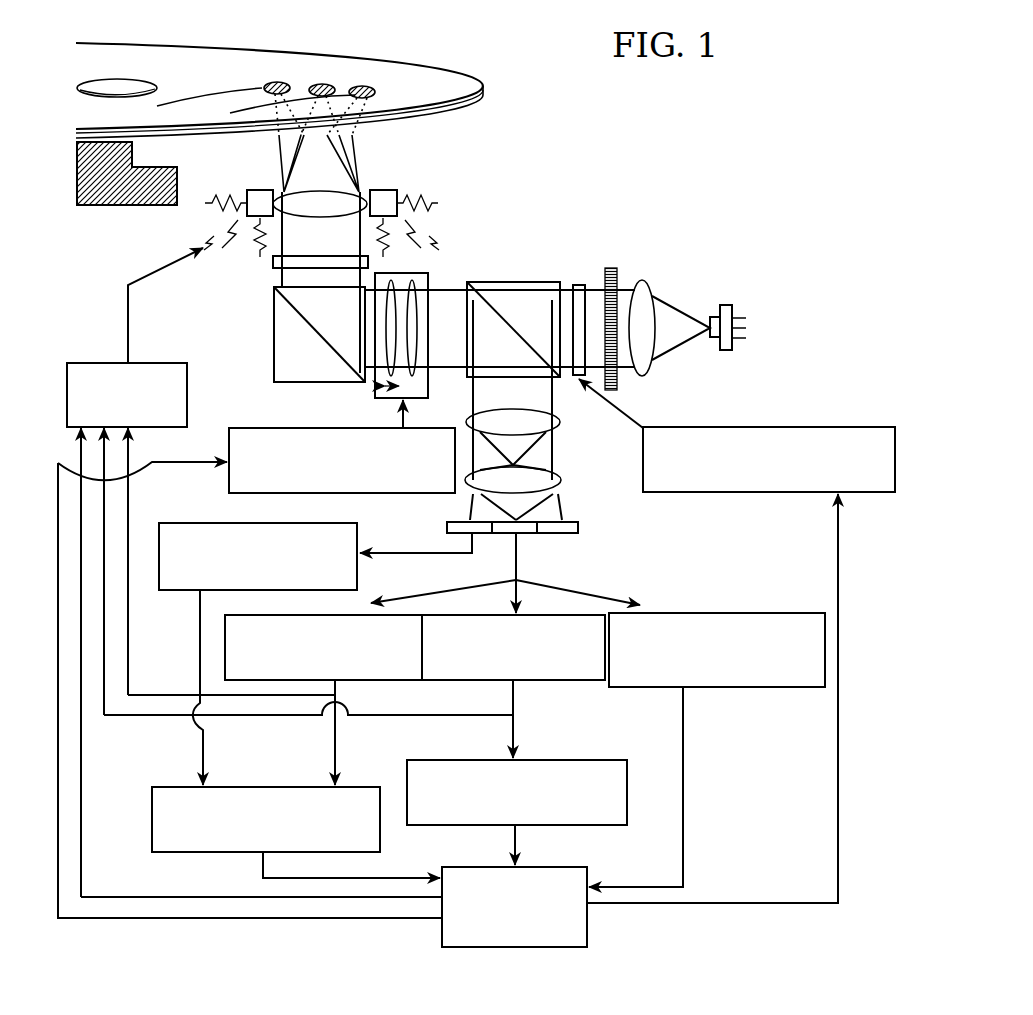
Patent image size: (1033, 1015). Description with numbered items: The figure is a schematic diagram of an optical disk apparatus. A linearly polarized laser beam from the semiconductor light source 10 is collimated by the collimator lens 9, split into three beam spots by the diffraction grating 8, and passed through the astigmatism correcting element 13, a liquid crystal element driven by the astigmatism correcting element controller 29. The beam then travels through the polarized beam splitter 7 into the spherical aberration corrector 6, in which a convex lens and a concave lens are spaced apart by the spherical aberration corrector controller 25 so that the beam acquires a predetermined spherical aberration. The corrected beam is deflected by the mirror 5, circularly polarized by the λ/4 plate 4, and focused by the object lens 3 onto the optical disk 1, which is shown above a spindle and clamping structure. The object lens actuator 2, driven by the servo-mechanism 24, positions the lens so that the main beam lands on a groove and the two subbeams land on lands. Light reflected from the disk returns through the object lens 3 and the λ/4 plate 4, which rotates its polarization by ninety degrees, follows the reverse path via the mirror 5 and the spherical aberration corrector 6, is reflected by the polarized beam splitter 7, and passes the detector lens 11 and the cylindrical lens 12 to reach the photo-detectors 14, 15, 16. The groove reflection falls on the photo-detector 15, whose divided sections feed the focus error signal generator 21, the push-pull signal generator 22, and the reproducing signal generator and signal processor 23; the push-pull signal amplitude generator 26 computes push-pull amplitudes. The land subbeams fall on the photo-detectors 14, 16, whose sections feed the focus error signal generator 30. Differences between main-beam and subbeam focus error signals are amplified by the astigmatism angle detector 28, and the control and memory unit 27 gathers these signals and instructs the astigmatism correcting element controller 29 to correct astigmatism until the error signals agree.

The optical disk 1 is at (388, 54).
The object lens actuator 2 is at (397, 192).
The object lens 3 is at (366, 172).
The λ/4 plate 4 is at (271, 268).
The mirror 5 is at (273, 350).
The spherical aberration corrector 6 is at (420, 272).
The polarized beam splitter 7 is at (512, 281).
The diffraction grating 8 is at (609, 267).
The collimator lens 9 is at (640, 279).
The semiconductor light source 10 is at (728, 351).
The detector lens 11 is at (562, 427).
The cylindrical lens 12 is at (562, 478).
The astigmatism correcting element 13 is at (582, 284).
The photo-detector 14 is at (450, 519).
The photo-detector 15 is at (527, 534).
The photo-detector 16 is at (579, 522).
The focus error signal generator 21 is at (378, 682).
The push-pull signal generator 22 is at (548, 682).
The reproducing signal generator and signal processor 23 is at (743, 688).
The servo-mechanism 24 is at (66, 393).
The spherical aberration corrector controller 25 is at (280, 428).
The push-pull signal amplitude generator 26 is at (627, 823).
The control and memory unit 27 is at (516, 947).
The astigmatism angle detector 28 is at (152, 815).
The astigmatism correcting element controller 29 is at (822, 427).
The focus error signal generator 30 is at (212, 523).